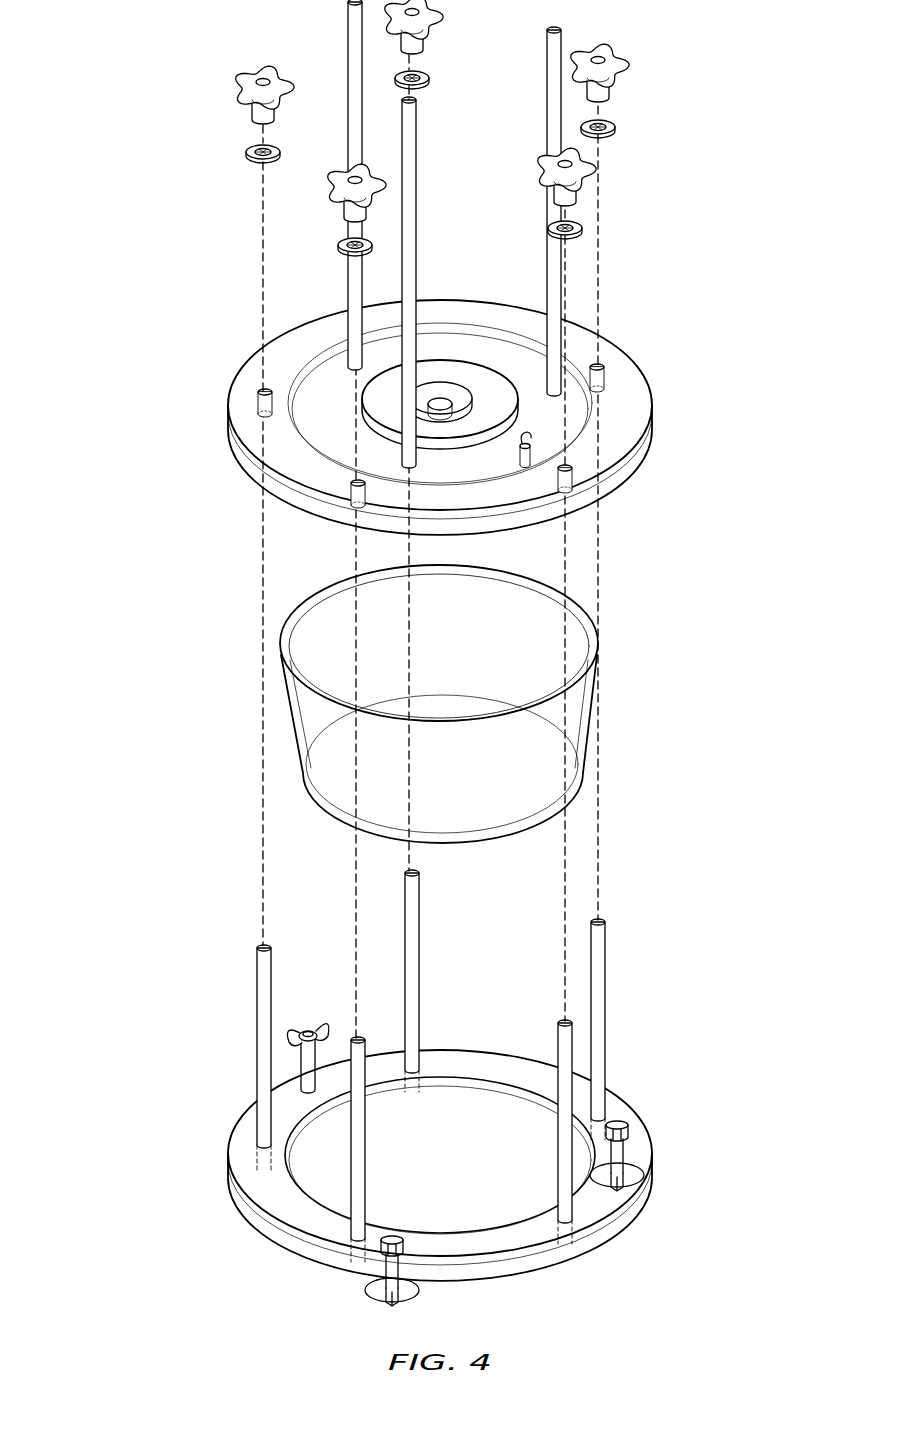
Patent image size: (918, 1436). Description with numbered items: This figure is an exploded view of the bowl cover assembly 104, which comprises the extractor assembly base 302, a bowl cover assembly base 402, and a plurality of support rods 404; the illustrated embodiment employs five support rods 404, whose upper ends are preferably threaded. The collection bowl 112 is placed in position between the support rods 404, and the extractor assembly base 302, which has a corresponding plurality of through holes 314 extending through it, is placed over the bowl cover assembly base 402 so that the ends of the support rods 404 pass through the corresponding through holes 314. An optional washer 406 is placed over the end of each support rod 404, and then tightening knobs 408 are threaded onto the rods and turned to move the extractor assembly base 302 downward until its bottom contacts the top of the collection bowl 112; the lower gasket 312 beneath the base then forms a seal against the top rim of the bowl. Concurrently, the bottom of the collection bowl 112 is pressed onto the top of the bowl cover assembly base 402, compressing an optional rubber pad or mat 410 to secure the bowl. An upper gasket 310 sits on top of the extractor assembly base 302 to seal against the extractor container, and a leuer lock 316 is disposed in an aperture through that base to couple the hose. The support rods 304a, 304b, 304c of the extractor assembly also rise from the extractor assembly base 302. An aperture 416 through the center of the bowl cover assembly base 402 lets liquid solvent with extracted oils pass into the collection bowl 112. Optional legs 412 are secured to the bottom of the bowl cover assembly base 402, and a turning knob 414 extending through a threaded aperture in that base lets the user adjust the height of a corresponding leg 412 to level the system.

The bowl cover assembly 104 is at (103, 494).
The collection bowl 112 is at (290, 703).
The extractor assembly base 302 is at (653, 412).
The support rod 304a is at (348, 38).
The support rod 304b is at (547, 65).
The support rod 304c is at (416, 236).
The upper gasket 310 is at (458, 432).
The lower gasket 312 is at (290, 462).
The through holes 314 is at (420, 322).
The leuer lock 316 is at (530, 448).
The bowl cover assembly base 402 is at (228, 1160).
The support rods 404 is at (416, 872).
The washer 406 is at (250, 150).
The tightening knobs 408 is at (245, 88).
The rubber pad or mat 410 is at (443, 1088).
The legs 412 is at (633, 1193).
The turning knob 414 is at (308, 1027).
The aperture 416 is at (448, 400).